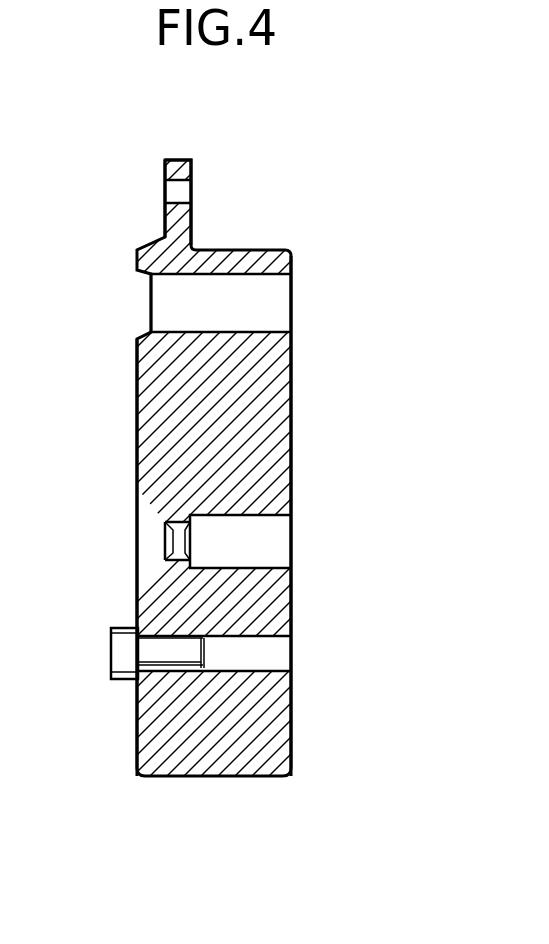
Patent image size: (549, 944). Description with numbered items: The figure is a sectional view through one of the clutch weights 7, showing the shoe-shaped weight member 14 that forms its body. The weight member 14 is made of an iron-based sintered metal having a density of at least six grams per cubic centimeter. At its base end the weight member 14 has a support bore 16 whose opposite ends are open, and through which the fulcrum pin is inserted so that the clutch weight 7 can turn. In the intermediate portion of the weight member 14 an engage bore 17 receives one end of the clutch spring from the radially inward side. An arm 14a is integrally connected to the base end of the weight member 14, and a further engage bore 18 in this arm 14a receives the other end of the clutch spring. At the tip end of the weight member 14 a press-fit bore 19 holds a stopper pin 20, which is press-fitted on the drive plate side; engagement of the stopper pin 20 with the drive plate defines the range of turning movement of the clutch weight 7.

The clutch weight 7 is at (178, 795).
The weight member 14 is at (286, 734).
The arm 14a is at (182, 160).
The support bore 16 is at (265, 332).
The engage bore 17 is at (175, 540).
The engage bore 18 is at (187, 196).
The press-fit bore 19 is at (272, 641).
The stopper pin 20 is at (110, 655).